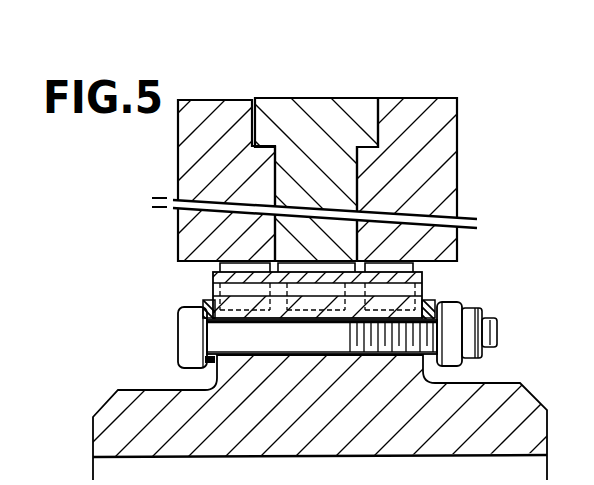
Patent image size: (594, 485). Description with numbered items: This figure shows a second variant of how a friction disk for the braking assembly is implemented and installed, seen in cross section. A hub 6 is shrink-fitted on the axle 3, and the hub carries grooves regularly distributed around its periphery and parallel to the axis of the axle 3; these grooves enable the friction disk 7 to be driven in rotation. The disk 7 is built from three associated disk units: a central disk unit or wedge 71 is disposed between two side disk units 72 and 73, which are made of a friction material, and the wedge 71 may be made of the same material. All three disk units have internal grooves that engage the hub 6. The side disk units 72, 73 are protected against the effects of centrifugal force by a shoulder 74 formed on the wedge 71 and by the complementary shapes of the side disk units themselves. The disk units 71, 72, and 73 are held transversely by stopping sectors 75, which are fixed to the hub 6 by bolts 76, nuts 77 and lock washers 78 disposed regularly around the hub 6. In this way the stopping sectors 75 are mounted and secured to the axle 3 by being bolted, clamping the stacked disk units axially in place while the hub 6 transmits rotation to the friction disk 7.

The axle 3 is at (183, 473).
The hub 6 is at (297, 242).
The friction disk 7 is at (297, 242).
The central disk unit or wedge 71 is at (337, 193).
The side disk unit 72 is at (207, 160).
The side disk unit 73 is at (437, 132).
The shoulder 74 is at (321, 117).
The stopping sector 75 is at (210, 302).
The bolt 76 is at (192, 337).
The nut 77 is at (450, 302).
The lock washer 78 is at (478, 362).